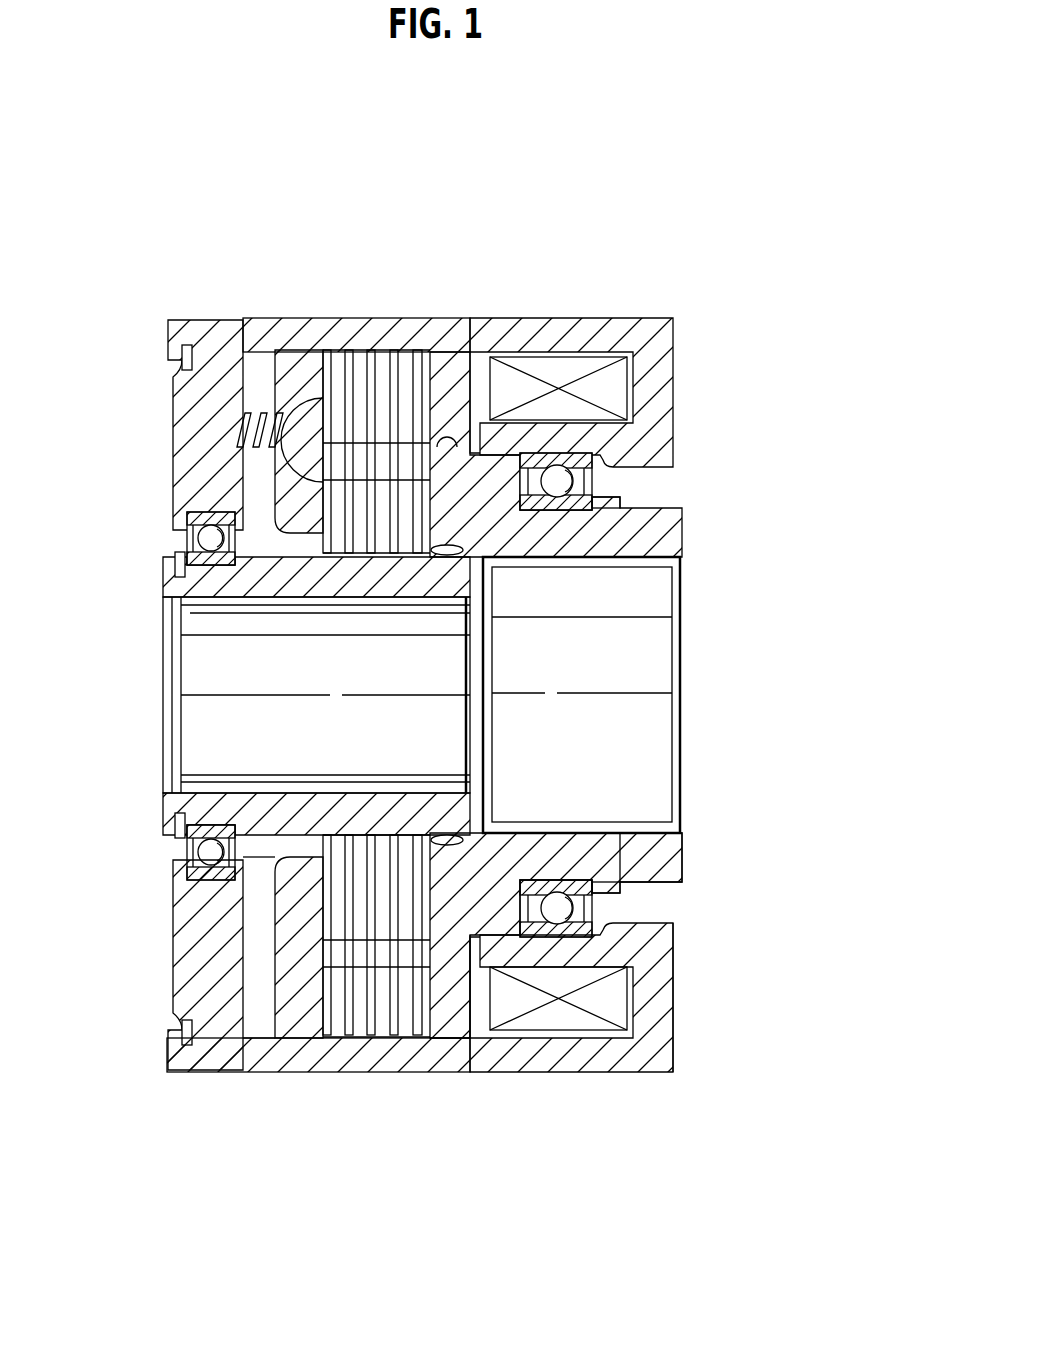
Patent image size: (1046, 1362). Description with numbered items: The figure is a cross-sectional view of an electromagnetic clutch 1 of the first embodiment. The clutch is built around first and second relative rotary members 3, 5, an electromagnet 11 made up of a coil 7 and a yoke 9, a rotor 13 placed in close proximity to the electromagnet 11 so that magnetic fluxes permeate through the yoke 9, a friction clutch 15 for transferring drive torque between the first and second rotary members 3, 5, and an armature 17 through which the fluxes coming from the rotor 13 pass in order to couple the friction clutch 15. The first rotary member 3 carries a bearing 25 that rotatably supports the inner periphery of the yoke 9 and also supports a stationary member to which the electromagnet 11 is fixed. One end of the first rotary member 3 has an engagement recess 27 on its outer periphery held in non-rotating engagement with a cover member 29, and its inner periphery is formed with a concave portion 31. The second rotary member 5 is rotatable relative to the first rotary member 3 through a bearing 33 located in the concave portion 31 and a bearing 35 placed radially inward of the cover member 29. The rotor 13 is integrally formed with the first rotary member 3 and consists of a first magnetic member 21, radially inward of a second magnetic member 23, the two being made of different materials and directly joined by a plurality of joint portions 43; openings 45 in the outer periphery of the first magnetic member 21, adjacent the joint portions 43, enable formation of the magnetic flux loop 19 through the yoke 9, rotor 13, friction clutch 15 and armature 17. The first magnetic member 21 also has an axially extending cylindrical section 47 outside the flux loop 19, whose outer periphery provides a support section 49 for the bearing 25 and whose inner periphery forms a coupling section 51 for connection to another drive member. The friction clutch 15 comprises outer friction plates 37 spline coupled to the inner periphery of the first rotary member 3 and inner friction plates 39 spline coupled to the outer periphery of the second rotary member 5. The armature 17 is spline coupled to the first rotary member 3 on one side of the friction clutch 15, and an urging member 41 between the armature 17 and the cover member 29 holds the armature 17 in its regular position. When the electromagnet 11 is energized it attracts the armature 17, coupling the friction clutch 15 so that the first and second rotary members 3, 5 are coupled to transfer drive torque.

The electromagnetic clutch 1 is at (542, 176).
The first rotary member 3 is at (630, 310).
The second rotary member 5 is at (150, 572).
The coil 7 is at (603, 992).
The yoke 9 is at (673, 953).
The electromagnet 11 is at (688, 1010).
The rotor 13 is at (412, 312).
The friction clutch 15 is at (387, 1060).
The armature 17 is at (300, 1010).
The magnetic flux loop 19 is at (545, 322).
The first magnetic member 21 is at (542, 862).
The second magnetic member 23 is at (460, 1010).
The bearing 25 is at (683, 864).
The engagement recess 27 is at (220, 320).
The cover member 29 is at (190, 942).
The concave portion 31 is at (518, 840).
The bearing 33 is at (448, 562).
The bearing 35 is at (205, 565).
The outer friction plates 37 is at (325, 1045).
The inner friction plates 39 is at (295, 860).
The urging member 41 is at (235, 432).
The joint portions 43 is at (452, 362).
The openings 45 is at (447, 450).
The cylindrical section 47 is at (670, 522).
The support section 49 is at (555, 508).
The coupling section 51 is at (607, 508).